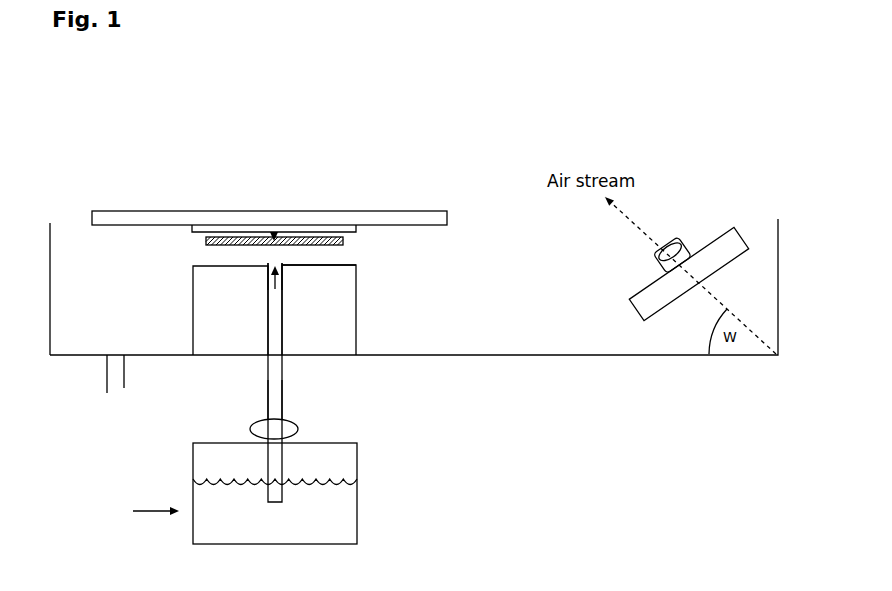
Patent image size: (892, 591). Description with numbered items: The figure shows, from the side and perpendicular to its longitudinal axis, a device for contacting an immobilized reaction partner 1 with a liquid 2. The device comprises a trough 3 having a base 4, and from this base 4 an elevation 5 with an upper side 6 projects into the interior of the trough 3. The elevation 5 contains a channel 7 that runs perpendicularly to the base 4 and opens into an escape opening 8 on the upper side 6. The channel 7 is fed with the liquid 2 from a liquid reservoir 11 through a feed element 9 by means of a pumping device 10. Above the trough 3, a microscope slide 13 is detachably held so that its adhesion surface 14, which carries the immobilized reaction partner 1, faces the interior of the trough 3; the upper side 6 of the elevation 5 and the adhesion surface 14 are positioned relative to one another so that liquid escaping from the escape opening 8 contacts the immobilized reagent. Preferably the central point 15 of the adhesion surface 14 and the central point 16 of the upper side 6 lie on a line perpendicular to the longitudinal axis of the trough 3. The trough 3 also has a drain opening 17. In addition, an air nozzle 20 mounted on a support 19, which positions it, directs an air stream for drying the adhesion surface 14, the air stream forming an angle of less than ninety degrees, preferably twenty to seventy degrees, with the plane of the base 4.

The immobilized reaction partner 1 is at (230, 238).
The liquid 2 is at (329, 524).
The trough 3 is at (68, 362).
The base 4 is at (78, 355).
The elevation 5 is at (343, 322).
The upper side 6 is at (353, 260).
The channel 7 is at (282, 322).
The escape opening 8 is at (270, 262).
The feed element 9 is at (282, 409).
The pumping device 10 is at (298, 431).
The liquid reservoir 11 is at (143, 513).
The microscope slide 13 is at (417, 215).
The adhesion surface 14 is at (328, 232).
The central point 15 is at (274, 233).
The central point 16 is at (275, 289).
The drain opening 17 is at (113, 377).
The support 19 is at (726, 248).
The air nozzle 20 is at (671, 252).